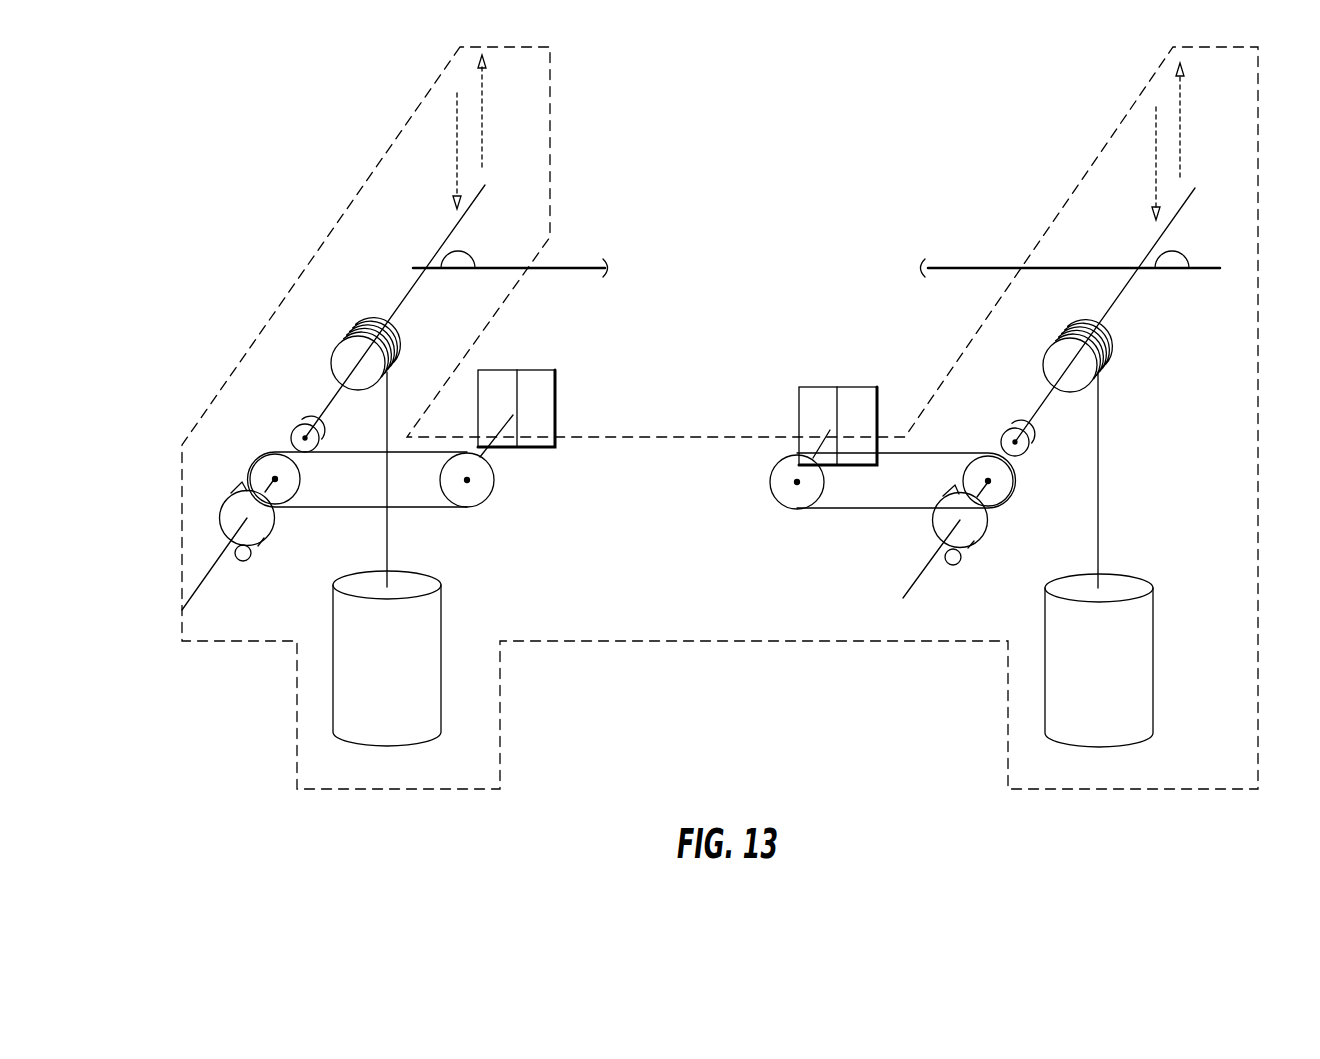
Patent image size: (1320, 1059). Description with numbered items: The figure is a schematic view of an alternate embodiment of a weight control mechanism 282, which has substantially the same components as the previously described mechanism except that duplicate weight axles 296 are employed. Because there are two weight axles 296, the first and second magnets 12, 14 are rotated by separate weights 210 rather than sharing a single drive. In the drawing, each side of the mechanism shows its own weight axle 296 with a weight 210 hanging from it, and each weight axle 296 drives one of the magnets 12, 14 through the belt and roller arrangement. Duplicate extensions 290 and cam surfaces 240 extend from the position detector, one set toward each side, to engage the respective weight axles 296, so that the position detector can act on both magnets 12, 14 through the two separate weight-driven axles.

The weight control mechanism 282 is at (296, 281).
The extension 290 is at (563, 267).
The cam surface 240 is at (477, 262).
The weight axle 296 is at (405, 297).
The first magnet 12 is at (548, 387).
The second magnet 14 is at (870, 405).
The weight 210 is at (431, 620).